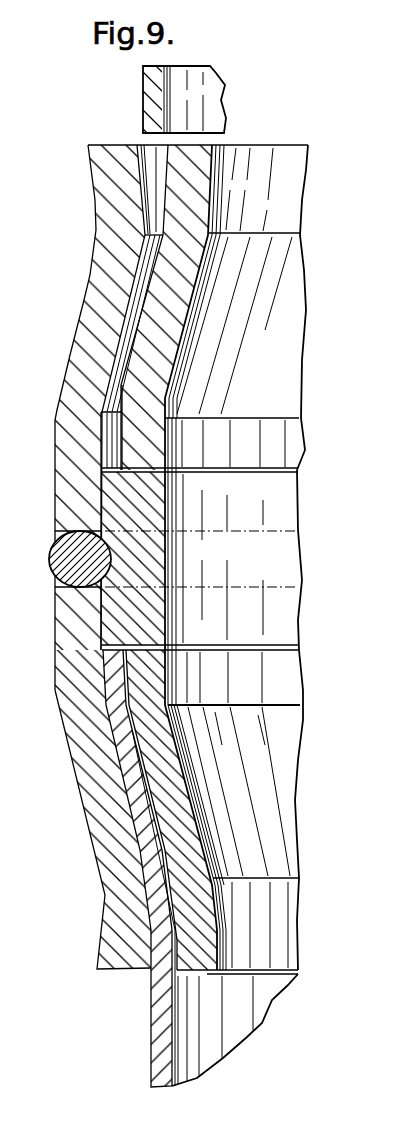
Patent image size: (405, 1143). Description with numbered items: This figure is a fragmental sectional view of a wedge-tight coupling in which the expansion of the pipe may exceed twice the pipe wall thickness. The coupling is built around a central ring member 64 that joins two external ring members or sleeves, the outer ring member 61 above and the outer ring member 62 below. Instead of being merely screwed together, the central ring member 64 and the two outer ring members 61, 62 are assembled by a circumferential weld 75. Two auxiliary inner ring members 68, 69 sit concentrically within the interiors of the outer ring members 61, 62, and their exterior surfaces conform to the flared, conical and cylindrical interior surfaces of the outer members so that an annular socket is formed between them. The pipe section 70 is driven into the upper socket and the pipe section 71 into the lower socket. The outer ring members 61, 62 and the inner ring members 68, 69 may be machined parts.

The outer ring member 61 is at (88, 331).
The outer ring member 62 is at (103, 832).
The central ring member 64 is at (167, 548).
The inner ring member 68 is at (173, 333).
The inner ring member 69 is at (177, 818).
The pipe section 70 is at (143, 112).
The pipe section 71 is at (163, 1024).
The circumferential weld 75 is at (82, 563).